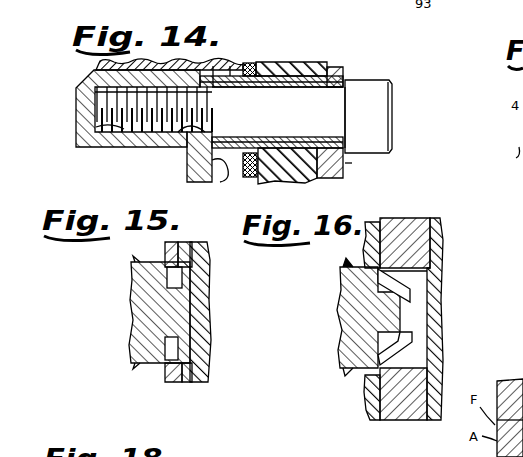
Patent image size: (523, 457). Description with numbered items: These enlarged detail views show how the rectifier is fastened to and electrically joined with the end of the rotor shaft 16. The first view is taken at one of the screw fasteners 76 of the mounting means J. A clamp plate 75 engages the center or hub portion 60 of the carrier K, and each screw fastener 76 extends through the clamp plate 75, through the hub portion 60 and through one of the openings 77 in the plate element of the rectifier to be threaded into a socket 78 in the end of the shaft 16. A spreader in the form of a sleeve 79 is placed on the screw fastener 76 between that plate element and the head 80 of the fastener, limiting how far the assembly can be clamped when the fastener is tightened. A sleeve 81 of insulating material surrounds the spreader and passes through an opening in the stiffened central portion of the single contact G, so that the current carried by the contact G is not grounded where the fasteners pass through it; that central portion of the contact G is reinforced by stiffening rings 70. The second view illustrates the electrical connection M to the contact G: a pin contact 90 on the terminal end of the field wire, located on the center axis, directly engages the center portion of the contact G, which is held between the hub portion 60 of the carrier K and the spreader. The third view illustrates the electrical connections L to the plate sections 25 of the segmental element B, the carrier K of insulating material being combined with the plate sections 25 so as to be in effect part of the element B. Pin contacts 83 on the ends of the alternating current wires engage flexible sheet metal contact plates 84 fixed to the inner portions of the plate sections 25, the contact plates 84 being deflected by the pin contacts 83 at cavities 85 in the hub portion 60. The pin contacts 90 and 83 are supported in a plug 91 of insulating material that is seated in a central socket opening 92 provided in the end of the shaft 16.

In FIG. 14, the shaft 16 is at (96, 146).
In FIG. 14, the plug 91 is at (100, 66).
In FIG. 15, the plug 91 is at (133, 367).
In FIG. 16, the plug 91 is at (345, 376).
In FIG. 14, the screw fasteners 76 is at (108, 97).
In FIG. 14, the sockets 78 is at (95, 131).
In FIG. 14, the hub portion 60 is at (288, 72).
In FIG. 14, the socket opening 92 is at (263, 67).
In FIG. 14, the contact G is at (262, 72).
In FIG. 15, the contact G is at (182, 383).
In FIG. 14, the clamp plate 75 is at (342, 80).
In FIG. 14, the sleeves 79 is at (258, 90).
In FIG. 14, the heads 80 is at (376, 117).
In FIG. 14, the mounting means J is at (345, 163).
In FIG. 14, the openings 77 is at (200, 137).
In FIG. 14, the sleeve 81 is at (232, 174).
In FIG. 14, the stiffening rings 70 is at (250, 178).
In FIG. 15, the stiffening rings 70 is at (172, 384).
In FIG. 15, the electrical connection M is at (133, 318).
In FIG. 15, the pin contact 90 is at (131, 350).
In FIG. 15, the carrier K is at (210, 282).
In FIG. 16, the carrier K is at (442, 322).
In FIG. 16, the conductive element B is at (440, 200).
In FIG. 16, the electrical connections L is at (338, 332).
In FIG. 16, the contact plates 84 is at (410, 282).
In FIG. 16, the pin contacts 83 is at (340, 352).
In FIG. 16, the cavities 85 is at (368, 395).
In FIG. 16, the plate sections 25 is at (404, 420).